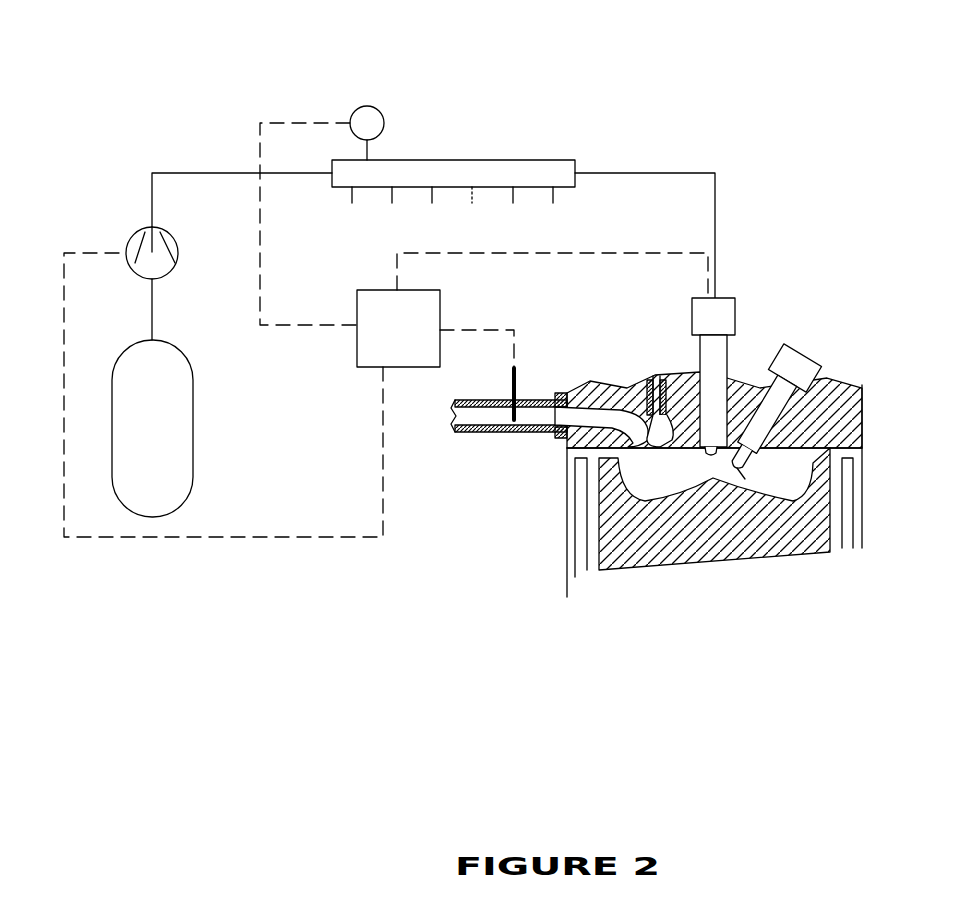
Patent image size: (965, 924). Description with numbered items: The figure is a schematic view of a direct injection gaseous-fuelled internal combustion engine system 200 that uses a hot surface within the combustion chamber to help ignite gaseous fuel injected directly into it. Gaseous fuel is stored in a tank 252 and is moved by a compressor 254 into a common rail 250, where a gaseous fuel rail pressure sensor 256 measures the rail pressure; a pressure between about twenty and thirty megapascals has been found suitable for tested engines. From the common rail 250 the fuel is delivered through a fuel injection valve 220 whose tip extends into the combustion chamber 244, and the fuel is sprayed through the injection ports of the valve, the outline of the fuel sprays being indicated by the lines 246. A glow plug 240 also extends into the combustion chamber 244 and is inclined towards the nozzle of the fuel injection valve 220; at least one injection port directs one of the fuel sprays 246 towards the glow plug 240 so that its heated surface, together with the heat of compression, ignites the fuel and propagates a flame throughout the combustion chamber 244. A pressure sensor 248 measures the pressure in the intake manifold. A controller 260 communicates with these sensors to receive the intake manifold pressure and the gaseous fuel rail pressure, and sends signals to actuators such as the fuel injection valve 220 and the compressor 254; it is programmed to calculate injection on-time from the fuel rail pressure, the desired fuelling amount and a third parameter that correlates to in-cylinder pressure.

The internal combustion engine system 200 is at (596, 126).
The fuel injection valve 220 is at (730, 320).
The glow plug 240 is at (800, 377).
The combustion chamber 244 is at (707, 453).
The fuel sprays 246 is at (745, 478).
The pressure sensor 248 is at (518, 400).
The common rail 250 is at (500, 170).
The tank 252 is at (172, 403).
The compressor 254 is at (147, 233).
The gaseous fuel rail pressure sensor 256 is at (355, 110).
The controller 260 is at (428, 341).